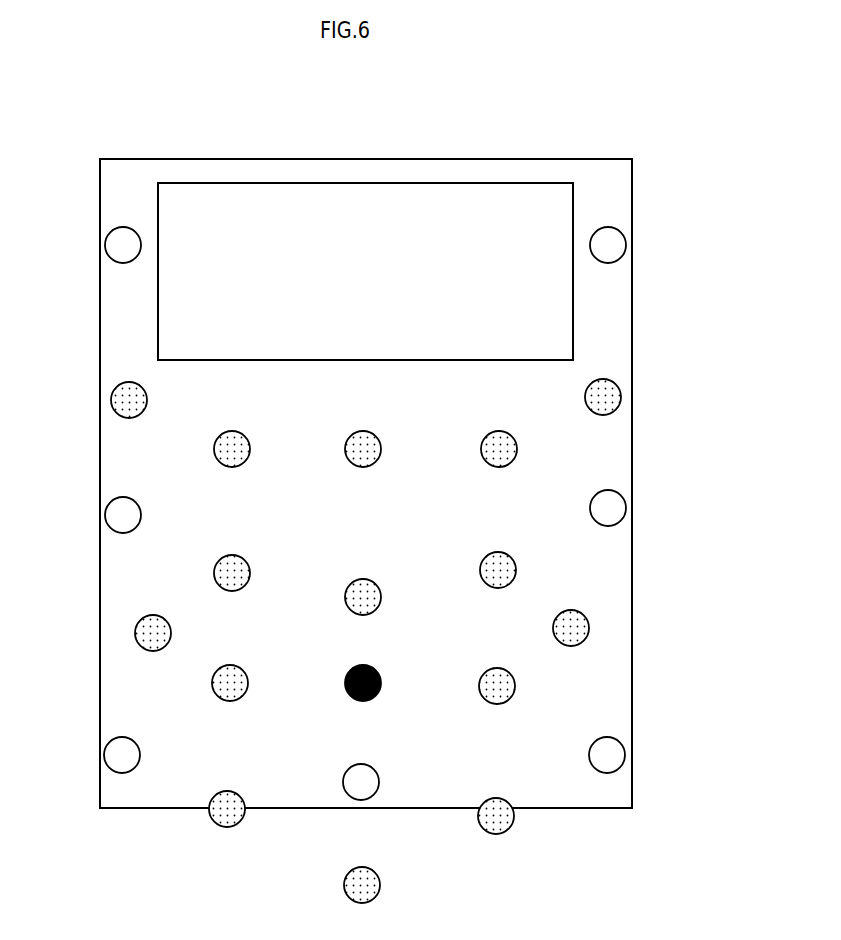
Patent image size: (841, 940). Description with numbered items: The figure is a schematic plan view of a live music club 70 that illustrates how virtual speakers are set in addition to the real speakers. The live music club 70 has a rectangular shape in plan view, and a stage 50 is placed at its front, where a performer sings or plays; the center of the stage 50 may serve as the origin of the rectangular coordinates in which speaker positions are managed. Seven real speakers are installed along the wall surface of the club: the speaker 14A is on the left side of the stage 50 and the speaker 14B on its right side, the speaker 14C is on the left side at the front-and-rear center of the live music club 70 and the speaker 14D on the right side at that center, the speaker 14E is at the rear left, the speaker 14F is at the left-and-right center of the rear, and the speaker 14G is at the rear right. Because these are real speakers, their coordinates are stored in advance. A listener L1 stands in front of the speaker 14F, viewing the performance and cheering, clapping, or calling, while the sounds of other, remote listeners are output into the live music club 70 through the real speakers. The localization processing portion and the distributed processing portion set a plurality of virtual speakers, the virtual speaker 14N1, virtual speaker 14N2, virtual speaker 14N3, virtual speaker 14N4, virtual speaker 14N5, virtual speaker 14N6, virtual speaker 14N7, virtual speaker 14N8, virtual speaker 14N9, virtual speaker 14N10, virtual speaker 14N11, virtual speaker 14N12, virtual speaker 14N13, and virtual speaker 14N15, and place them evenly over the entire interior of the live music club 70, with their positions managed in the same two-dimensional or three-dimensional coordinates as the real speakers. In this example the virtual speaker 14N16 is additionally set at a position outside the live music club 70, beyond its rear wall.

The live music club 70 is at (578, 163).
The stage 50 is at (460, 183).
The speaker 14A is at (106, 237).
The speaker 14B is at (625, 240).
The speaker 14C is at (106, 508).
The speaker 14D is at (625, 503).
The speaker 14E is at (106, 748).
The speaker 14F is at (375, 771).
The speaker 14G is at (625, 750).
The virtual speaker 14N1 is at (112, 393).
The virtual speaker 14N2 is at (245, 436).
The virtual speaker 14N3 is at (376, 436).
The virtual speaker 14N4 is at (512, 436).
The virtual speaker 14N5 is at (616, 385).
The virtual speaker 14N6 is at (245, 560).
The virtual speaker 14N7 is at (376, 584).
The virtual speaker 14N8 is at (511, 557).
The virtual speaker 14N9 is at (136, 629).
The virtual speaker 14N10 is at (243, 670).
The virtual speaker 14N11 is at (485, 673).
The virtual speaker 14N12 is at (589, 626).
The virtual speaker 14N13 is at (252, 785).
The virtual speaker 14N15 is at (520, 788).
The virtual speaker 14N16 is at (405, 868).
The listener L1 is at (376, 670).